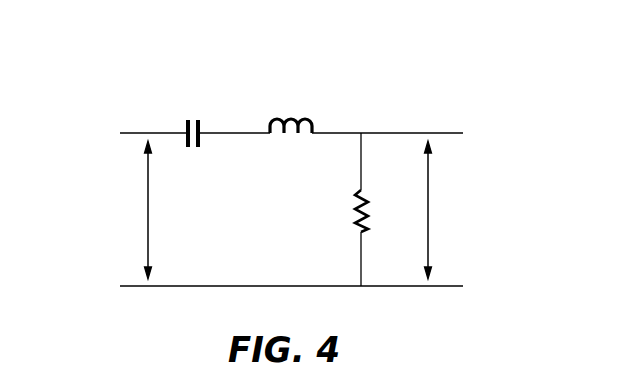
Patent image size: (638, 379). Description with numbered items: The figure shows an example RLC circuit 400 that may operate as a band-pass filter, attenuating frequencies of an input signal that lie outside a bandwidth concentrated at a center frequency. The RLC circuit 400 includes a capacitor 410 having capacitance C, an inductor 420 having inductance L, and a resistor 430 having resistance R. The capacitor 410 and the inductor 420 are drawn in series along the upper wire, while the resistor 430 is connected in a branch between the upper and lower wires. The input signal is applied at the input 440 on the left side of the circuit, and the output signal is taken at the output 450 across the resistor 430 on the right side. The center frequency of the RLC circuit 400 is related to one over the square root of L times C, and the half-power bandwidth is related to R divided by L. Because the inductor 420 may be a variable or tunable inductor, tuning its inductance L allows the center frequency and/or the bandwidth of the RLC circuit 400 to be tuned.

The RLC circuit 400 is at (120, 77).
The capacitor 410 is at (192, 118).
The inductor 420 is at (295, 118).
The resistor 430 is at (355, 206).
The input 440 is at (147, 211).
The output 450 is at (430, 211).